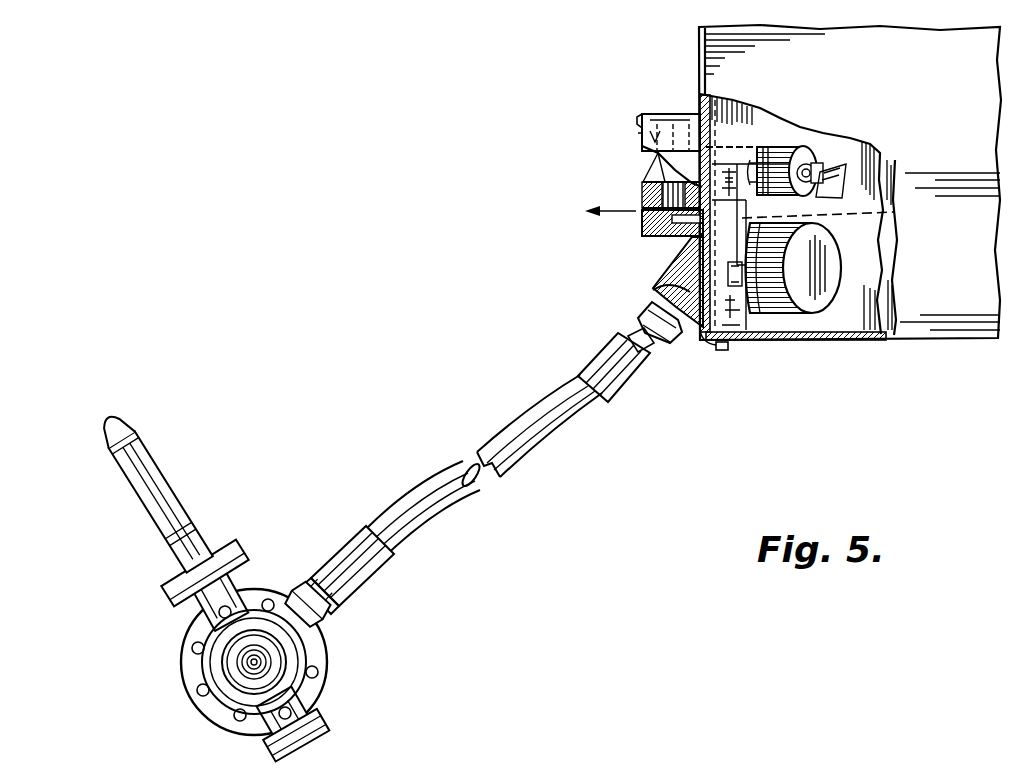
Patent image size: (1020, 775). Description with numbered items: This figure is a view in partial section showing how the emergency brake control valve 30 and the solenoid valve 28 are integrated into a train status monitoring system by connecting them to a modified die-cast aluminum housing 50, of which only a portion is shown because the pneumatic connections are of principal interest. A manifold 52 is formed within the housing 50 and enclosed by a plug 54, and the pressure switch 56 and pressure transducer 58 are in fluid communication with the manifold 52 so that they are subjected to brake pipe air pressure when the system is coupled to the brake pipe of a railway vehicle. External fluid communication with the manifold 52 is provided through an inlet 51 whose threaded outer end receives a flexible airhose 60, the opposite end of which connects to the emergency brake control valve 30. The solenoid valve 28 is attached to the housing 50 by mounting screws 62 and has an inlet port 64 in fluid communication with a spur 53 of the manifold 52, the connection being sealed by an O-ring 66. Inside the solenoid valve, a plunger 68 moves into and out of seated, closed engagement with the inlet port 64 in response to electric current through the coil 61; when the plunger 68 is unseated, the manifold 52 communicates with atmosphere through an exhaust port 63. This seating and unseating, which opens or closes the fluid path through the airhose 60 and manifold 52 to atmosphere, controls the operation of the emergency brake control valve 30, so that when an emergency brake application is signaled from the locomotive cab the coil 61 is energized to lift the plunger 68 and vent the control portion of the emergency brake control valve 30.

The solenoid valve 28 is at (641, 88).
The emergency brake control valve 30 is at (272, 538).
The housing 50 is at (776, 345).
The inlet 51 is at (665, 282).
The manifold 52 is at (810, 299).
The spur 53 is at (803, 224).
The plug 54 is at (720, 350).
The pressure switch 56 is at (808, 160).
The pressure transducer 58 is at (816, 312).
The flexible airhose 60 is at (555, 432).
The coil 61 is at (650, 158).
The mounting screws 62 is at (640, 118).
The exhaust port 63 is at (640, 204).
The inlet port 64 is at (675, 237).
The O-ring 66 is at (676, 240).
The plunger 68 is at (662, 177).